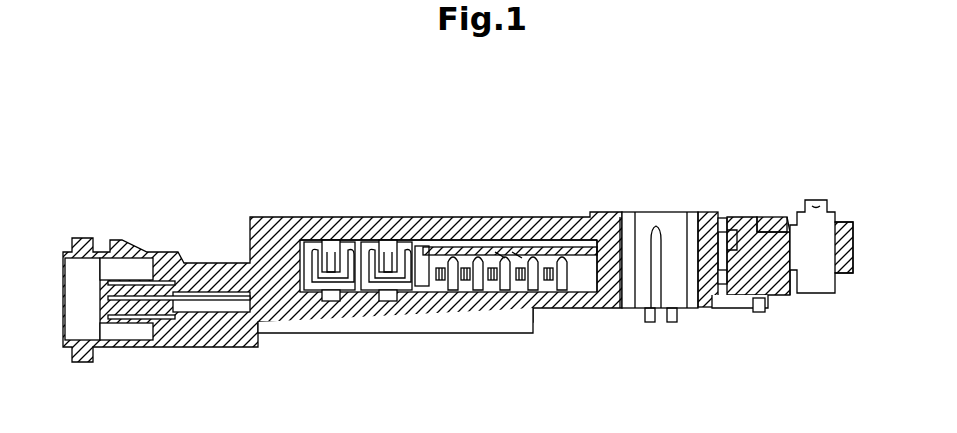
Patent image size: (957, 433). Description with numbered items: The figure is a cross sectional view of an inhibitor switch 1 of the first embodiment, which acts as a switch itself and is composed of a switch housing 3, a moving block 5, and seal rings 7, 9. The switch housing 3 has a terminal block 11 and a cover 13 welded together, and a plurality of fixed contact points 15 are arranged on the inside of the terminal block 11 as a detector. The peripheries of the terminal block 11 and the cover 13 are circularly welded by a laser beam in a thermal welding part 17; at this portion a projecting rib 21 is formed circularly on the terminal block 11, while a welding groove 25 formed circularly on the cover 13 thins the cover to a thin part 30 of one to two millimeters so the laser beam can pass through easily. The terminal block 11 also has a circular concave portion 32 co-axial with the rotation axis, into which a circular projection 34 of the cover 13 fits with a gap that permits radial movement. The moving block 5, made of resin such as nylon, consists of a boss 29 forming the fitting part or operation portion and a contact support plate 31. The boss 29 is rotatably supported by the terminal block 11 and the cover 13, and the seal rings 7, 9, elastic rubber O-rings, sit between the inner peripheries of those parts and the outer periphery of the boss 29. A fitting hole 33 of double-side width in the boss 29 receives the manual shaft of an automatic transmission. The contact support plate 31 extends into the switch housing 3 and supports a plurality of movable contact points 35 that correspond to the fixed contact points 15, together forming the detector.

The inhibitor switch 1 is at (567, 178).
The switch housing 3 is at (467, 213).
The moving block 5 is at (628, 210).
The seal ring 7 is at (722, 300).
The seal ring 9 is at (716, 213).
The terminal block 11 is at (553, 310).
The cover 13 is at (522, 215).
The fixed contact points 15 is at (470, 295).
The thermal welding part 17 is at (780, 213).
The projecting rib 21 is at (785, 295).
The welding groove 25 is at (770, 215).
The boss 29 is at (608, 215).
The thin part 30 is at (775, 215).
The contact support plate 31 is at (545, 215).
The circular concave portion 32 is at (752, 312).
The fitting hole 33 is at (675, 212).
The circular projection 34 is at (730, 213).
The movable contact points 35 is at (450, 215).